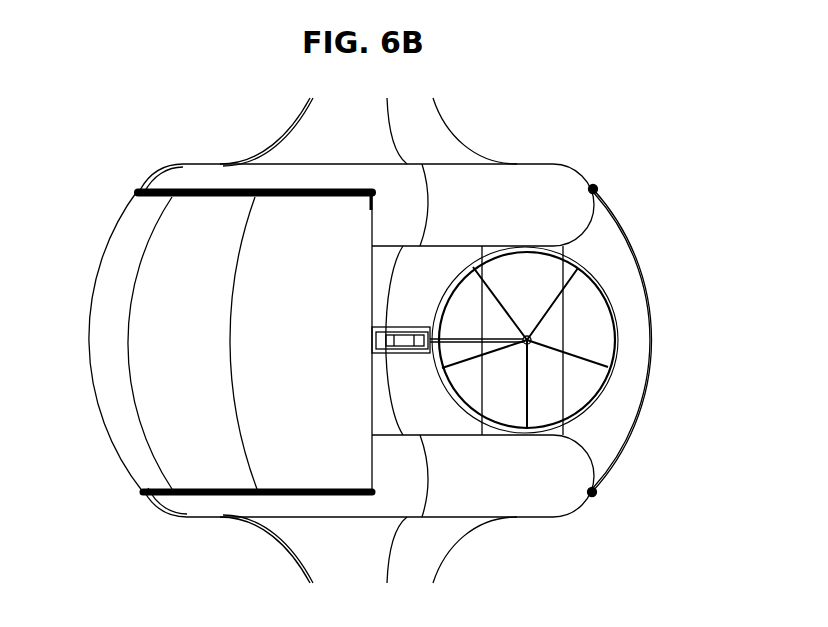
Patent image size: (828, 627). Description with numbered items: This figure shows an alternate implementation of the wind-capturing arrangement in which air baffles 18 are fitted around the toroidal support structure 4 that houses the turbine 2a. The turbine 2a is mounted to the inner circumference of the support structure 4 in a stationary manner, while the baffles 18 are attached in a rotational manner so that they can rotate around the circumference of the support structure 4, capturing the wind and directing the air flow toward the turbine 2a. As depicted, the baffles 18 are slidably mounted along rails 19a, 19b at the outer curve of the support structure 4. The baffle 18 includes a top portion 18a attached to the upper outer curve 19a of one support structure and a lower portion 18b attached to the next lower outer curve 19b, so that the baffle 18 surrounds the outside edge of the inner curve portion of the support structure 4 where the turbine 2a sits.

The air baffles 18 is at (170, 368).
The top portion 18a is at (593, 189).
The lower portion 18b is at (592, 492).
The rail 19a is at (593, 189).
The rail 19b is at (143, 492).
The toroidal support structure 4 is at (526, 517).
The turbine 2a is at (583, 410).